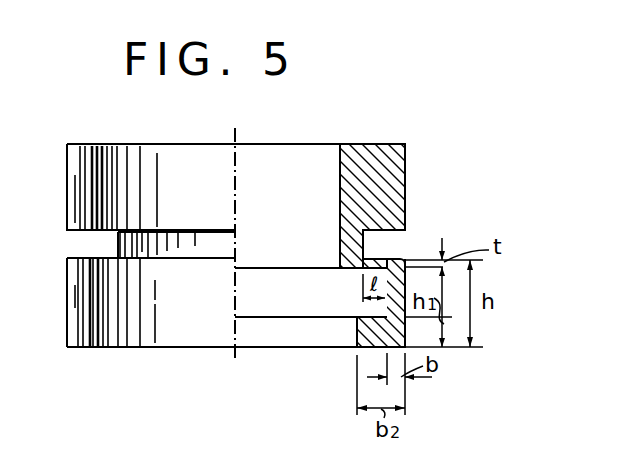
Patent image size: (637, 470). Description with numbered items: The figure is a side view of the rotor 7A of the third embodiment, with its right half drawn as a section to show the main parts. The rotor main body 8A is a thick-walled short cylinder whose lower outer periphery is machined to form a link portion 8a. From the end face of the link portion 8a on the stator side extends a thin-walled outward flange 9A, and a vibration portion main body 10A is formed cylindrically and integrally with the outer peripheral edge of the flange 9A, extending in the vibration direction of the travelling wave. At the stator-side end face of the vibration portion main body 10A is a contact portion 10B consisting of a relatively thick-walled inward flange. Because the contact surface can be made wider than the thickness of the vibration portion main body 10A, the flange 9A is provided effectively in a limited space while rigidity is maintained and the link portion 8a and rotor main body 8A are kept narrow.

The rotor 7A is at (428, 157).
The rotor main body 8A is at (385, 186).
The link portion 8a is at (364, 238).
The flange 9A is at (380, 251).
The vibration portion main body 10A is at (385, 316).
The contact portion 10B is at (352, 345).